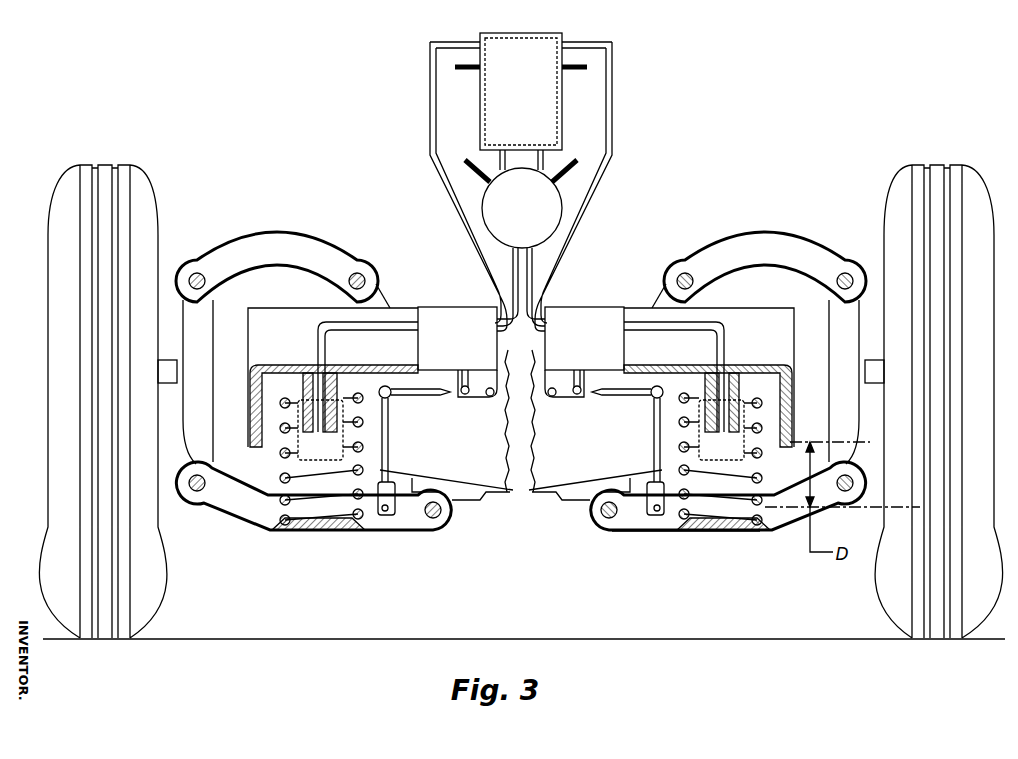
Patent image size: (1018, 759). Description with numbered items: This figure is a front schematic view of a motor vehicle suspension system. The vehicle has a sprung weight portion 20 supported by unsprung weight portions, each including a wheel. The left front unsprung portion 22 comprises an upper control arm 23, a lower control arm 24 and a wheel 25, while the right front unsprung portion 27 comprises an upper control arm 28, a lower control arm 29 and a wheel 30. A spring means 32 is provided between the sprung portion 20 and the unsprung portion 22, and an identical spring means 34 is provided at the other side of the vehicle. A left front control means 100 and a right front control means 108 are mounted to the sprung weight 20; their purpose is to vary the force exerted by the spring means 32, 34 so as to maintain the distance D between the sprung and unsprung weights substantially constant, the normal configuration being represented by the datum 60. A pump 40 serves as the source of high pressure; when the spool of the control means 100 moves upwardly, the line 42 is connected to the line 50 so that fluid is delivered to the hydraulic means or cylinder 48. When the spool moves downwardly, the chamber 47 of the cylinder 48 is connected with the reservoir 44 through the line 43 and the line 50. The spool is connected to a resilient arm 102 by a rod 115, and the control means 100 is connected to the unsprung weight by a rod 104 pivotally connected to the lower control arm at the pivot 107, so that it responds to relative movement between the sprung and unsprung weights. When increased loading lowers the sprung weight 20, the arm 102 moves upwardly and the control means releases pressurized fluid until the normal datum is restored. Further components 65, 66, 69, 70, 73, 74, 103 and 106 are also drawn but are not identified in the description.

The sprung weight portion 20 is at (497, 468).
The left front unsprung portion 22 is at (772, 538).
The upper control arm 23 is at (768, 238).
The lower control arm 24 is at (721, 533).
The wheel 25 is at (907, 172).
The right front unsprung portion 27 is at (242, 532).
The upper control arm 28 is at (250, 247).
The lower control arm 29 is at (305, 533).
The wheel 30 is at (155, 553).
The spring means 32 is at (682, 518).
The spring means 34 is at (362, 515).
The pump 40 is at (511, 218).
The line 42 is at (532, 256).
The line 43 is at (612, 97).
The reservoir 44 is at (533, 48).
The chamber 47 is at (722, 445).
The hydraulic means or cylinder 48 is at (755, 405).
The line 50 is at (723, 348).
The normal configuration datum 60 is at (812, 440).
The conduit branch 65 is at (510, 252).
The reservoir housing wall (left) 66 is at (430, 97).
The cylinder and spring (left) 69 is at (285, 414).
The conduit (left) 70 is at (318, 342).
The strut 73 is at (468, 72).
The strut 74 is at (574, 72).
The left front control means 100 is at (576, 300).
The resilient arm 102 is at (625, 396).
The pivot pin 103 is at (553, 397).
The rod 104 is at (654, 450).
The actuating rod 106 is at (652, 400).
The pivot 107 is at (652, 511).
The right front control means 108 is at (459, 300).
The rod 115 is at (579, 386).